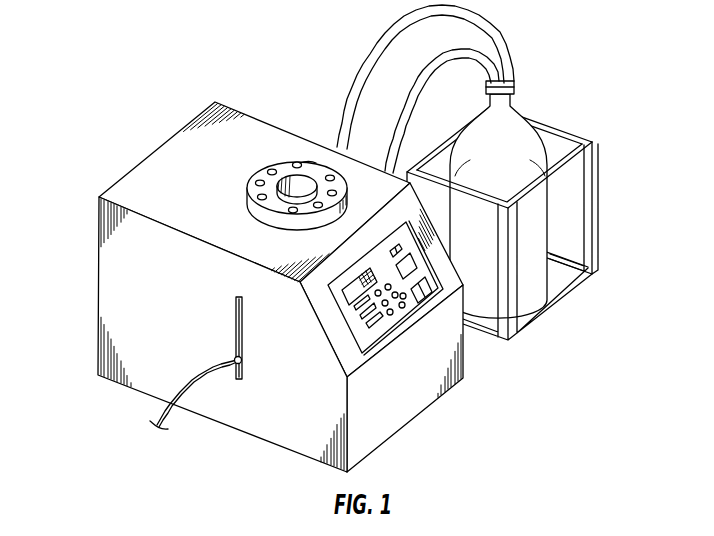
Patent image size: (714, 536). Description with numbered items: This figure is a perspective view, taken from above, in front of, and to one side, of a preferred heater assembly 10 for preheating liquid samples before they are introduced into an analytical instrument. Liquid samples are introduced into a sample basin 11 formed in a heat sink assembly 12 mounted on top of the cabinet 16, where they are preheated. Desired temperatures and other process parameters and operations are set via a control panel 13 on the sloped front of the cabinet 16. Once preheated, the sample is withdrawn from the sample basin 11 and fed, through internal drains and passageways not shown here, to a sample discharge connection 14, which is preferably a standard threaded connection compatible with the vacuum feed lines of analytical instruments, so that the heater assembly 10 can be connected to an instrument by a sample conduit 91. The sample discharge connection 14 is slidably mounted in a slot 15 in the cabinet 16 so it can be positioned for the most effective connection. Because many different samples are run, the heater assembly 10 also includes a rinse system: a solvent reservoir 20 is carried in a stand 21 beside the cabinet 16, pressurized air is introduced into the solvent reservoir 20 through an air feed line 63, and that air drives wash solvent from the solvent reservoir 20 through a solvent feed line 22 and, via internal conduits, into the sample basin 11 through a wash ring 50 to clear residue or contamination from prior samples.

The heater assembly 10 is at (239, 292).
The sample basin 11 is at (302, 195).
The heat sink assembly 12 is at (289, 223).
The control panel 13 is at (403, 307).
The sample discharge connection 14 is at (243, 360).
The slot 15 is at (237, 310).
The cabinet 16 is at (254, 420).
The solvent reservoir 20 is at (514, 163).
The stand 21 is at (526, 210).
The solvent feed line 22 is at (462, 56).
The wash ring 50 is at (302, 162).
The air feed line 63 is at (486, 28).
The sample conduit 91 is at (205, 375).